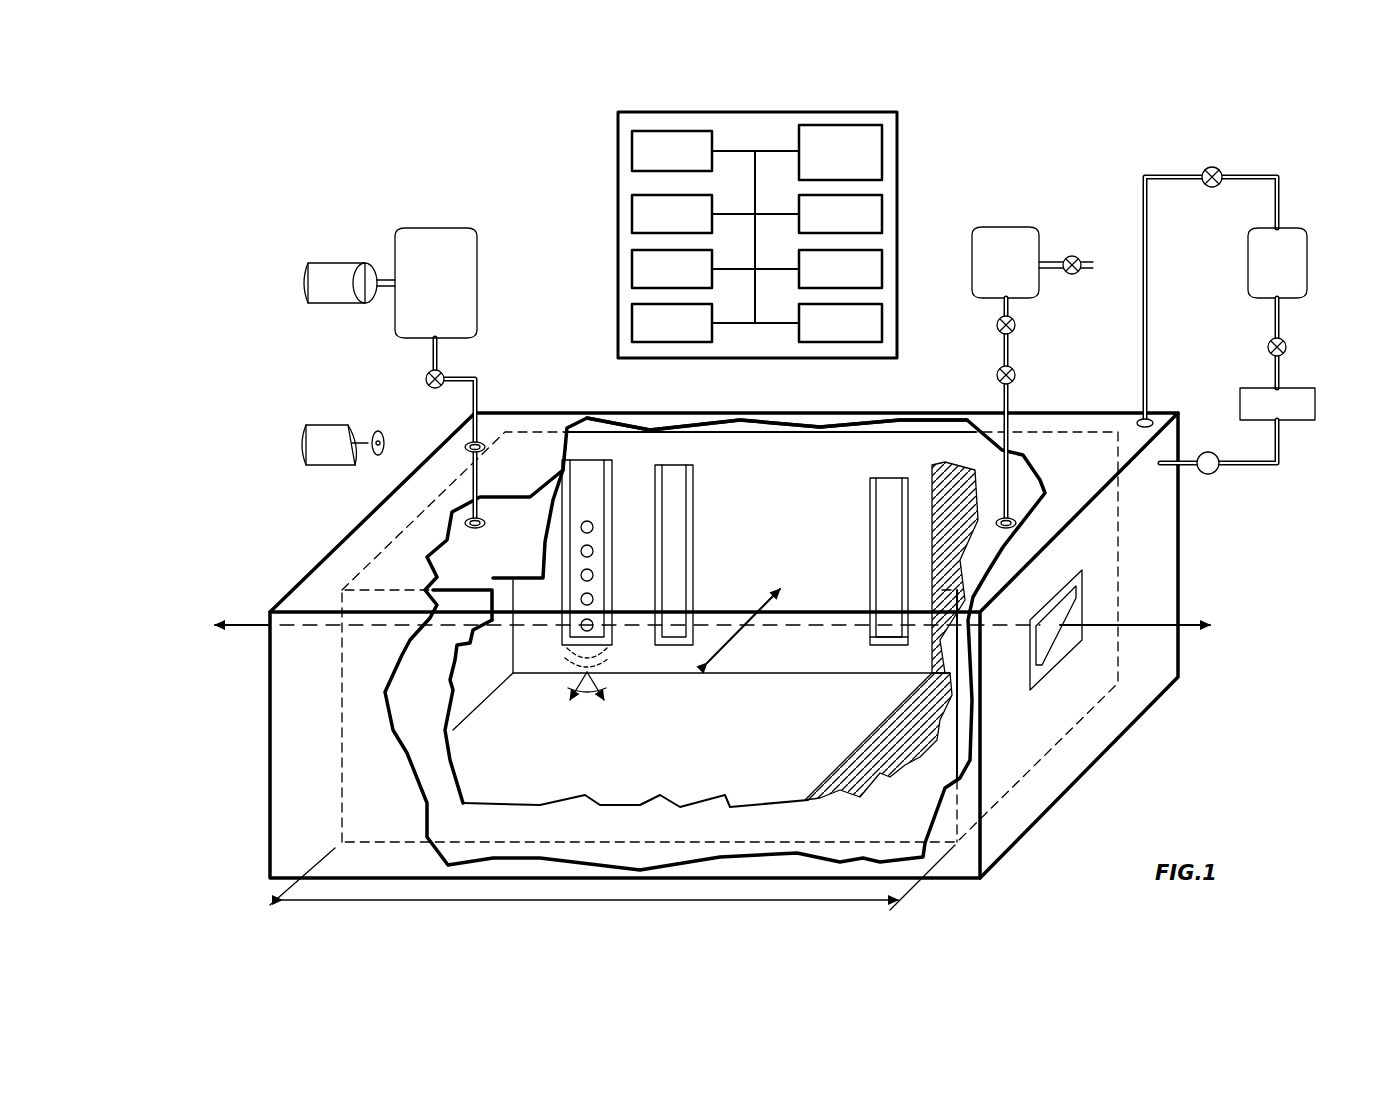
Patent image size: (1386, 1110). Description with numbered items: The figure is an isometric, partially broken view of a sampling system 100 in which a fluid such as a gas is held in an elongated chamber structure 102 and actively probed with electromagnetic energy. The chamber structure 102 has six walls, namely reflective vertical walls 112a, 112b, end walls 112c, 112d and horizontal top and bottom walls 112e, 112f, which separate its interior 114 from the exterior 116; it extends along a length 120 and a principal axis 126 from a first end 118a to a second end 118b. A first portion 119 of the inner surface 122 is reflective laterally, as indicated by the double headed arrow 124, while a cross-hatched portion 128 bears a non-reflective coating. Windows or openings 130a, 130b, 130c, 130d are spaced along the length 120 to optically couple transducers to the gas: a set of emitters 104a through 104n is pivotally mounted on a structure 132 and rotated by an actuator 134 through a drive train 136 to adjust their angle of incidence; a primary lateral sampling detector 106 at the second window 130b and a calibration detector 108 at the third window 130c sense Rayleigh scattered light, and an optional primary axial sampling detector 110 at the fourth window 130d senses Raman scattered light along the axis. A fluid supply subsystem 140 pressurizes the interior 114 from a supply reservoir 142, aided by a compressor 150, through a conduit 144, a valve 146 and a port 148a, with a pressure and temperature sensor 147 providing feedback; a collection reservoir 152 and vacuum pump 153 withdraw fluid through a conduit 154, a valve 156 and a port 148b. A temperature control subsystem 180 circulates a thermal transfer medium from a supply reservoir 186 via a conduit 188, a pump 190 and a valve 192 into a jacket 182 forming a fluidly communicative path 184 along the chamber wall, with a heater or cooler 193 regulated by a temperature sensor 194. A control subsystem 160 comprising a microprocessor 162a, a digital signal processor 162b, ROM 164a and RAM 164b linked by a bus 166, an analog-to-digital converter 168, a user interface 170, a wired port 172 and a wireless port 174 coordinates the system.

The sampling system 100 is at (275, 226).
The chamber structure 102 is at (403, 805).
The emitter 104a is at (590, 620).
The emitter 104n is at (592, 478).
The primary lateral sampling detector 106 is at (888, 567).
The calibration detector 108 is at (663, 552).
The primary axial sampling detector 110 is at (1052, 640).
The vertical wall 112a is at (793, 485).
The vertical wall 112b is at (455, 774).
The end wall 112c is at (485, 688).
The end wall 112d is at (1020, 745).
The horizontal top or bottom wall 112e is at (628, 778).
The horizontal top or bottom wall 112f is at (1058, 452).
The interior 114 is at (758, 698).
The exterior 116 is at (275, 530).
The first end 118a is at (320, 818).
The second end 118b is at (992, 836).
The first portion of inner surface 119 is at (770, 428).
The length 120 is at (595, 898).
The inner surface 122 is at (778, 572).
The double headed arrow 124 is at (737, 640).
The principal axis 126 is at (1180, 626).
The non-reflective portion 128 is at (945, 480).
The first window or opening 130a is at (560, 568).
The second window or opening 130b is at (873, 640).
The third window or opening 130c is at (660, 645).
The fourth window or opening 130d is at (1082, 578).
The structure 132 is at (585, 700).
The actuator 134 is at (338, 470).
The drive train 136 is at (565, 665).
The fluid supply subsystem 140 is at (416, 248).
The supply reservoir 142 is at (410, 230).
The conduit 144 is at (480, 392).
The valve 146 is at (425, 379).
The pressure and/or temperature sensor 147 is at (465, 440).
The port 148a is at (483, 520).
The port 148b is at (1015, 500).
The compressor 150 is at (345, 302).
The collection reservoir 152 is at (1018, 232).
The vacuum pump 153 is at (1018, 322).
The conduit 154 is at (1010, 330).
The valve 156 is at (996, 373).
The control subsystem 160 is at (754, 220).
The microprocessor 162a is at (632, 145).
The digital signal processor 162b is at (632, 214).
The read only memory or Flash memory 164a is at (632, 269).
The random access memory 164b is at (632, 323).
The bus 166 is at (730, 150).
The analog-to-digital converter 168 is at (882, 271).
The user interface 170 is at (882, 325).
The wired port 172 is at (882, 150).
The wireless port 174 is at (882, 216).
The temperature control subsystem 180 is at (1226, 343).
The jacket 182 is at (1172, 582).
The fluidly communicative path 184 is at (400, 720).
The thermal transfer medium supply reservoir 186 is at (1248, 267).
The conduit 188 is at (1148, 176).
The pump 190 is at (1215, 168).
The valve 192 is at (1267, 347).
The heater or cooler 193 is at (1240, 400).
The temperature sensor 194 is at (1208, 474).